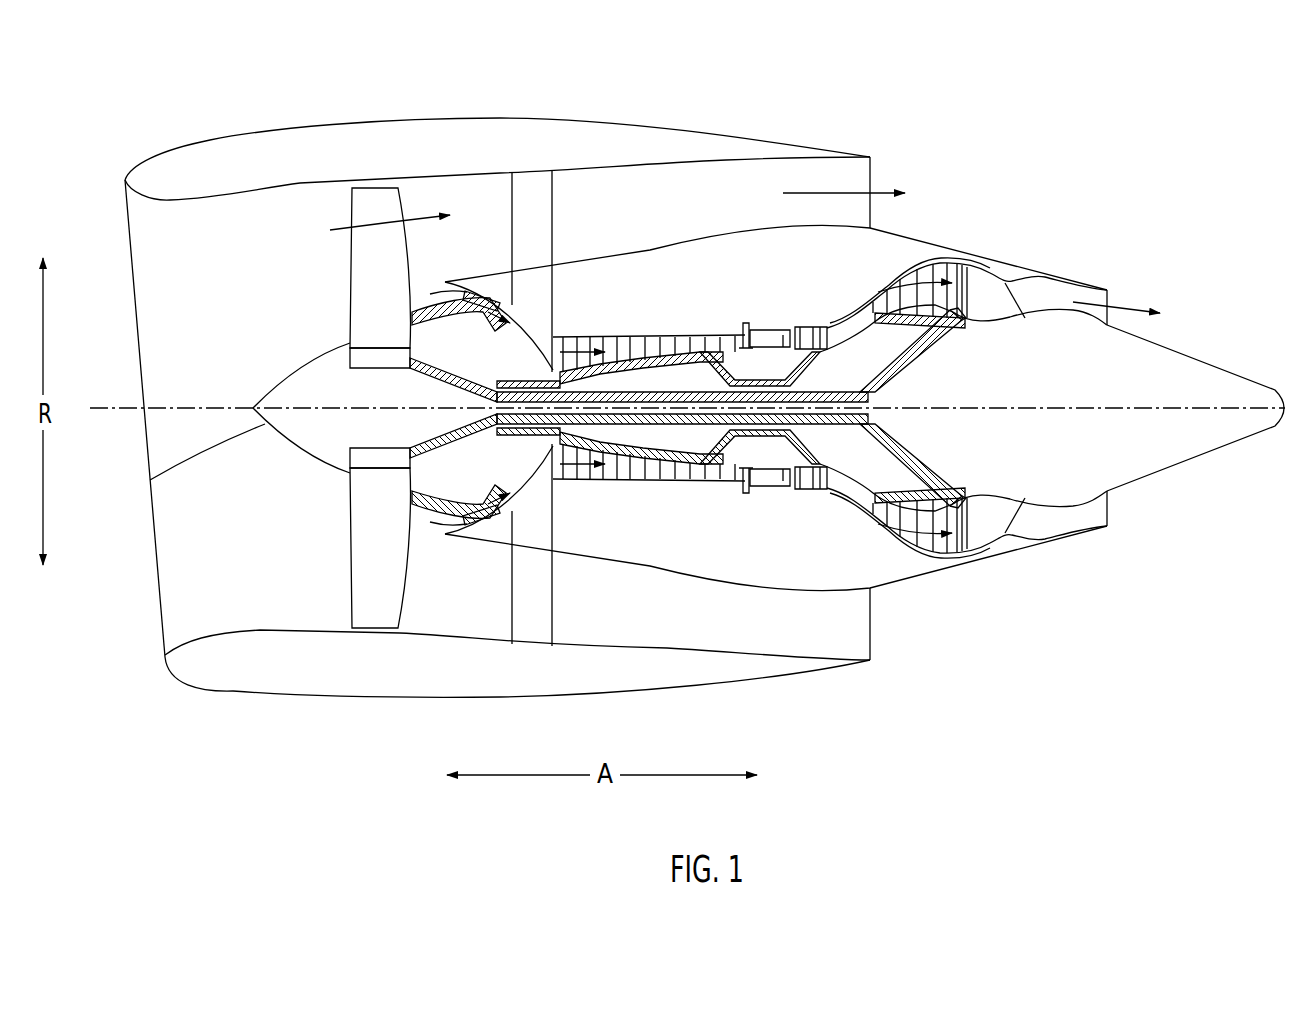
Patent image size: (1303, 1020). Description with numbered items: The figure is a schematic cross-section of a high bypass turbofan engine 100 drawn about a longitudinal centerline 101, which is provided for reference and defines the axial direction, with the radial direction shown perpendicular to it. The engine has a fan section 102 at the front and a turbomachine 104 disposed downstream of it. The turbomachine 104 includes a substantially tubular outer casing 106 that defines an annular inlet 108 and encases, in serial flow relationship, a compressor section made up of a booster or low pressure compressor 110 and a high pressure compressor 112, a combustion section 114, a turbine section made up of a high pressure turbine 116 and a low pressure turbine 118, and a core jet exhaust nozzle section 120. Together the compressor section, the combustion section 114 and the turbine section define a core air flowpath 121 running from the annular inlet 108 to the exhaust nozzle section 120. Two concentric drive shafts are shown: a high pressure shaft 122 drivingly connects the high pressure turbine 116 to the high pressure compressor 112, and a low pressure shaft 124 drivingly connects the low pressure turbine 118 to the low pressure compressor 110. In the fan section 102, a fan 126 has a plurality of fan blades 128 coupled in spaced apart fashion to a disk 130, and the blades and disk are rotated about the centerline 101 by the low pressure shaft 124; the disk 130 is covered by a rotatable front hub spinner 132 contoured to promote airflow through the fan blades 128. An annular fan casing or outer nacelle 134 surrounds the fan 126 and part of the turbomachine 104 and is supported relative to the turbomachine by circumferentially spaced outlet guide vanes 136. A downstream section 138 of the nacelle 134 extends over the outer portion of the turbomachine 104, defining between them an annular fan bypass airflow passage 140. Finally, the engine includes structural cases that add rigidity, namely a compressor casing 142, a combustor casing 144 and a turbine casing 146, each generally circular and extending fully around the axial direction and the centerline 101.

The turbofan engine 100 is at (1023, 128).
The longitudinal centerline 101 is at (1080, 408).
The fan section 102 is at (304, 203).
The turbomachine 104 is at (665, 222).
The outer casing 106 is at (727, 582).
The annular inlet 108 is at (454, 519).
The low pressure compressor 110 is at (488, 535).
The high pressure compressor 112 is at (586, 478).
The combustion section 114 is at (762, 476).
The high pressure turbine 116 is at (836, 483).
The low pressure turbine 118 is at (961, 550).
The core jet exhaust nozzle section 120 is at (1022, 520).
The core air flowpath 121 is at (533, 483).
The high pressure shaft 122 is at (768, 376).
The low pressure shaft 124 is at (823, 393).
The fan 126 is at (293, 277).
The fan blades 128 is at (348, 566).
The disk 130 is at (367, 360).
The front hub spinner 132 is at (150, 479).
The outer nacelle 134 is at (368, 696).
The outlet guide vanes 136 is at (553, 203).
The downstream section of the nacelle 138 is at (790, 146).
The fan bypass airflow passage 140 is at (762, 203).
The compressor casing 142 is at (693, 330).
The combustor casing 144 is at (757, 328).
The turbine casing 146 is at (912, 267).